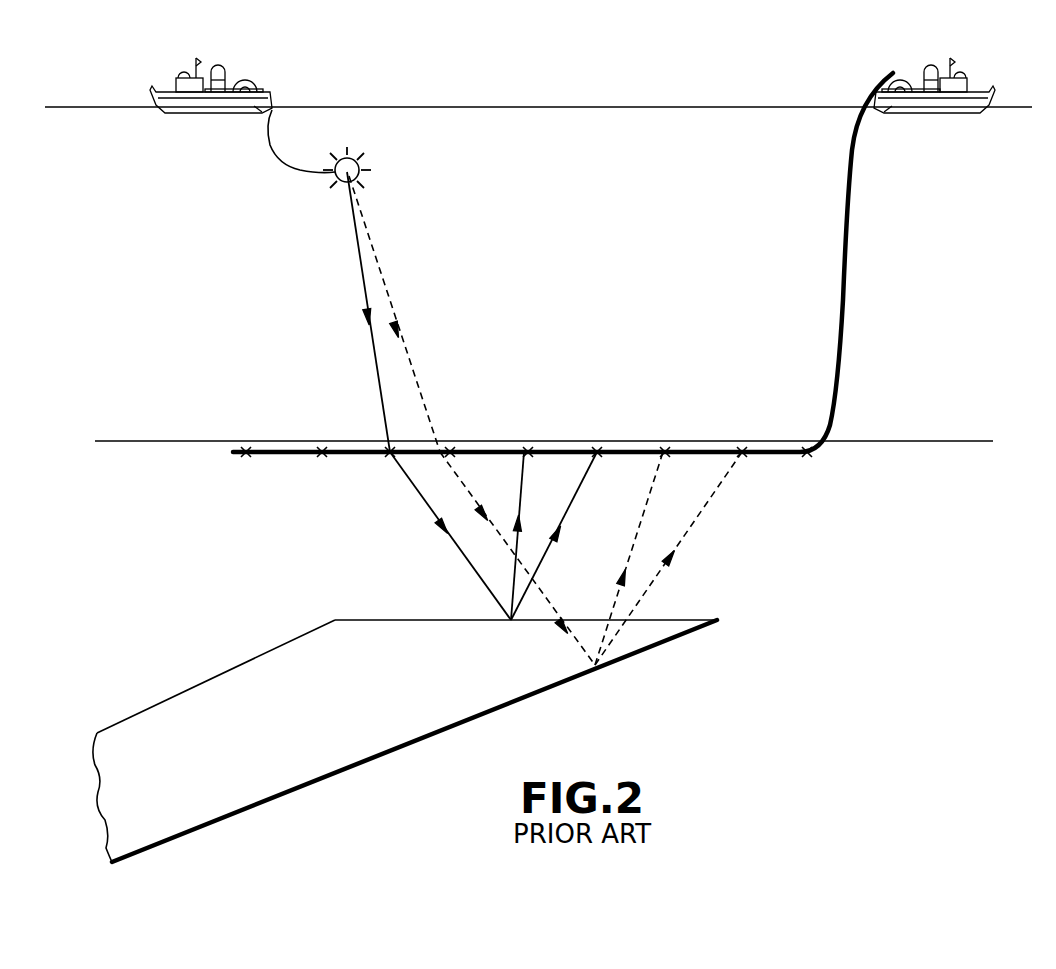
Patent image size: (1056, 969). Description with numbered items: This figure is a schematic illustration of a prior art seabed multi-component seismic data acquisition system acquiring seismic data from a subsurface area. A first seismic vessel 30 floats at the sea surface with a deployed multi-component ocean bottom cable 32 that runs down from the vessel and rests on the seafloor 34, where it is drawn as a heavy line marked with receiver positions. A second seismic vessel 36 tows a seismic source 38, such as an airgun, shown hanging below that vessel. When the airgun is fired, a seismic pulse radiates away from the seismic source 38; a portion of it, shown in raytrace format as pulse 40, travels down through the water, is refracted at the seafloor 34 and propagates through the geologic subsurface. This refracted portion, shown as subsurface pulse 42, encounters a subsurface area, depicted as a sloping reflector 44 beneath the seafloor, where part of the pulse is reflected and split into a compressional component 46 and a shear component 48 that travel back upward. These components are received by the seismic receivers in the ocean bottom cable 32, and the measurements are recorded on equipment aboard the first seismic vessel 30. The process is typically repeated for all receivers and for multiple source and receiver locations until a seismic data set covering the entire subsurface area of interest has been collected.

The first seismic vessel 30 is at (922, 73).
The multi-component ocean bottom cable 32 is at (290, 448).
The seafloor 34 is at (938, 437).
The second seismic vessel 36 is at (273, 92).
The seismic source 38 is at (357, 155).
The pulse 40 is at (362, 265).
The subsurface pulse 42 is at (428, 510).
The subsurface reflector 44 is at (540, 660).
The compressional component 46 is at (582, 484).
The shear component 48 is at (521, 480).